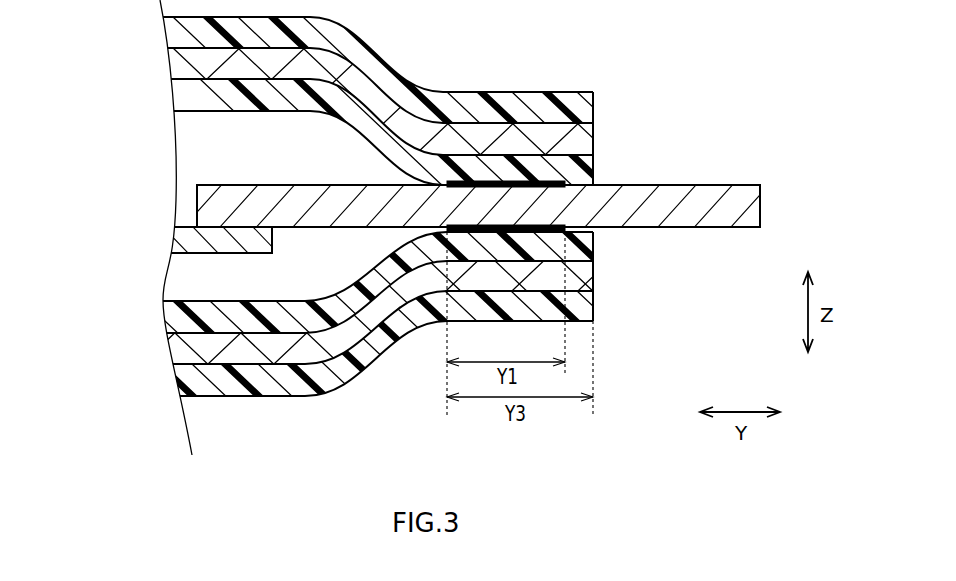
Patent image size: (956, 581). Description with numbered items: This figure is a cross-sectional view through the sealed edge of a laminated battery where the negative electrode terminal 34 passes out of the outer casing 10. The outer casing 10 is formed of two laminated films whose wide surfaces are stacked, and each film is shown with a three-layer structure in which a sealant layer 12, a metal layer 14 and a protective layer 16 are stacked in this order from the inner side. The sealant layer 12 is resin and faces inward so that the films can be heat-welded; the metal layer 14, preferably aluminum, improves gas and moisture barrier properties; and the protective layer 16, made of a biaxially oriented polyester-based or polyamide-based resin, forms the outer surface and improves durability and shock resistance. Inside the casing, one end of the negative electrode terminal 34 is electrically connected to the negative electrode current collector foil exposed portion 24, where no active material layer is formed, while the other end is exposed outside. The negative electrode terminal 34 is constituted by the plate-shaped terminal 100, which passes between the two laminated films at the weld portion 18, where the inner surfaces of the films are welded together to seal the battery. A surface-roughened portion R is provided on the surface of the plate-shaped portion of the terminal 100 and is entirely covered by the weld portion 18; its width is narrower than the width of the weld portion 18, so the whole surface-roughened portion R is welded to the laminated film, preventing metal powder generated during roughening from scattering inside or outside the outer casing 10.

The outer casing 10 is at (373, 202).
The sealant layer 12 is at (190, 99).
The metal layer 14 is at (185, 70).
The protective layer 16 is at (185, 35).
The weld portion 18 is at (572, 181).
The negative electrode current collector foil exposed portion 24 is at (183, 241).
The negative electrode terminal 34 is at (717, 190).
The terminal 100 is at (501, 182).
The surface-roughened portion R is at (542, 183).